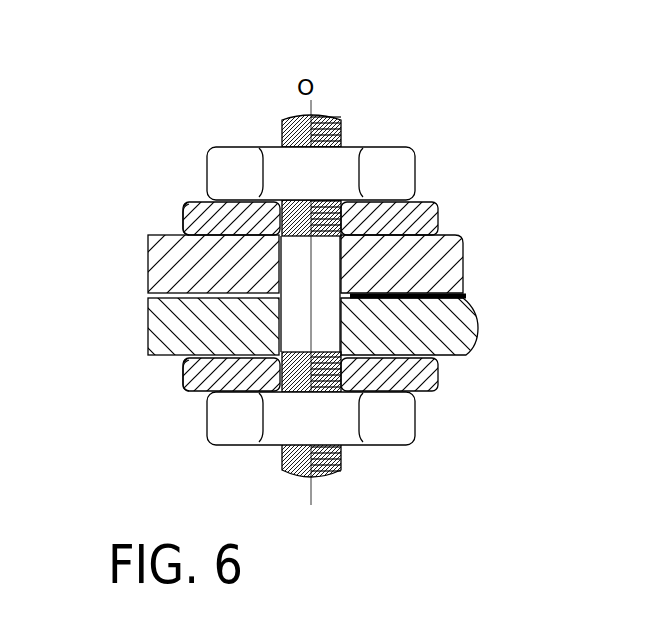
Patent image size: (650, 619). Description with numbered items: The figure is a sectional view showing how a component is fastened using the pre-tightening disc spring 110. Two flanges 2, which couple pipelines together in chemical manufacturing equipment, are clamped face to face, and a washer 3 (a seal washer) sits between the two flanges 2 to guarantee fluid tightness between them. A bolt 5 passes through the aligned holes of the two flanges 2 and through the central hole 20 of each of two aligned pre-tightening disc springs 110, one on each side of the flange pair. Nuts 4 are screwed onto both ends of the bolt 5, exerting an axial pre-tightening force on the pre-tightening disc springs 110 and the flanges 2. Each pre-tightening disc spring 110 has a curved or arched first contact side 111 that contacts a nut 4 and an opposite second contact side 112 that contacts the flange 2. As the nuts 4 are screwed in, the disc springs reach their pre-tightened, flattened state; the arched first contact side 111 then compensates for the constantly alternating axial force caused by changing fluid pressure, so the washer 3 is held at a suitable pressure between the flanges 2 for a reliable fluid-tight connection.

The flange 2 is at (452, 271).
The washer 3 is at (462, 298).
The nut 4 is at (335, 176).
The bolt 5 is at (330, 113).
The central hole 20 is at (279, 204).
The pre-tightening disc spring 110 is at (440, 206).
The first contact side 111 is at (195, 206).
The second contact side 112 is at (180, 215).